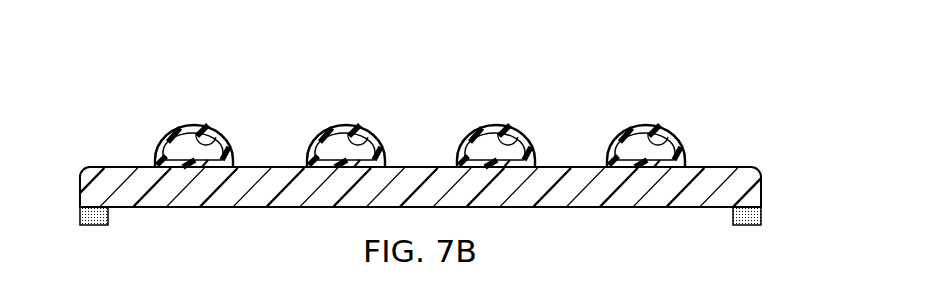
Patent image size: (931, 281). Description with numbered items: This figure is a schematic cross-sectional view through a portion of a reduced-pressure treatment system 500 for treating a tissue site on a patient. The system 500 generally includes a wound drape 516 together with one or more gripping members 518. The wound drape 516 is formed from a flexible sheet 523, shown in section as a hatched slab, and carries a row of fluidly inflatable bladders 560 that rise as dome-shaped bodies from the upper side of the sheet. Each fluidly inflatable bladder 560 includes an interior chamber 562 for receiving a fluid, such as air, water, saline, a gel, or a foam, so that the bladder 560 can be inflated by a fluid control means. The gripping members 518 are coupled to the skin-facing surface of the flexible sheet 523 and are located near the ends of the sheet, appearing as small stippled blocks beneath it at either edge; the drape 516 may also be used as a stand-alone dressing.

The reduced-pressure treatment system 500 is at (757, 105).
The wound drape 516 is at (766, 185).
The gripping member 518 is at (93, 226).
The flexible sheet 523 is at (95, 167).
The fluidly inflatable bladder 560 is at (172, 128).
The interior chamber 562 is at (212, 138).